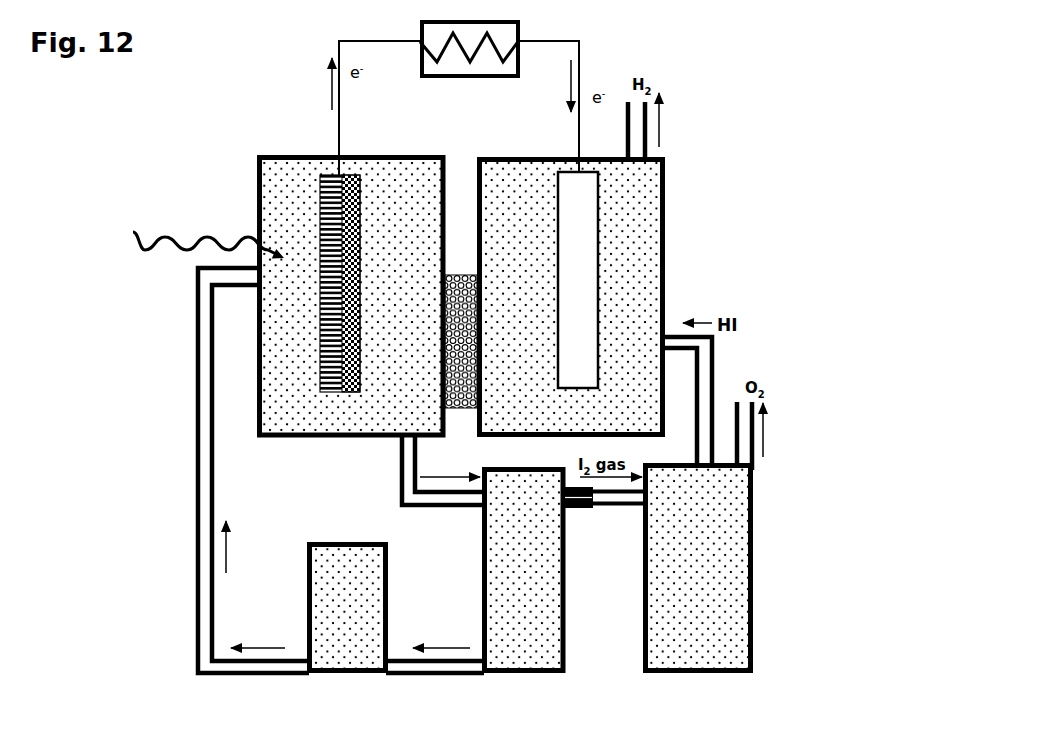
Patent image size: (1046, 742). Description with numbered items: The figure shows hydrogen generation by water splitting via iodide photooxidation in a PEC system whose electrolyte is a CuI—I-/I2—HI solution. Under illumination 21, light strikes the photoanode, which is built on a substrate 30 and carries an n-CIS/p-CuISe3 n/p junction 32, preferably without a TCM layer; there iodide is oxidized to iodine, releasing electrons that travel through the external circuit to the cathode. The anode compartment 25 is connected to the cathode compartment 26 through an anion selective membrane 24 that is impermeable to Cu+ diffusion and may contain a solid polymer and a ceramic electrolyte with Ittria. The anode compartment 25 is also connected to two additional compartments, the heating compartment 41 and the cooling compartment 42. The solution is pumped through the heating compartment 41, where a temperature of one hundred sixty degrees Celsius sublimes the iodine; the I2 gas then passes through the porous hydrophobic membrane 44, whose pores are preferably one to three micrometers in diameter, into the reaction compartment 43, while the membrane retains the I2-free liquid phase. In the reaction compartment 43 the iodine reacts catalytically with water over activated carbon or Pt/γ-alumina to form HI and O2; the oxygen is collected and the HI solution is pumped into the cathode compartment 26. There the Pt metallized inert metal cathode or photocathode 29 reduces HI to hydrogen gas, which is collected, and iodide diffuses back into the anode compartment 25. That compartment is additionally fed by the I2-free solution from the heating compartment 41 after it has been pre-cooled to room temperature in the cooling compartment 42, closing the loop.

The illumination 21 is at (160, 232).
The anion selective membrane 24 is at (447, 400).
The anode compartment 25 is at (257, 212).
The cathode compartment 26 is at (667, 217).
The cathode 29 is at (585, 280).
The substrate 30 is at (353, 340).
The n-CIS/p-CuISe3 n/p junction 32 is at (243, 267).
The heating compartment 41 is at (490, 675).
The cooling compartment 42 is at (315, 675).
The reaction compartment 43 is at (753, 575).
The hydrophobic membrane 44 is at (587, 508).